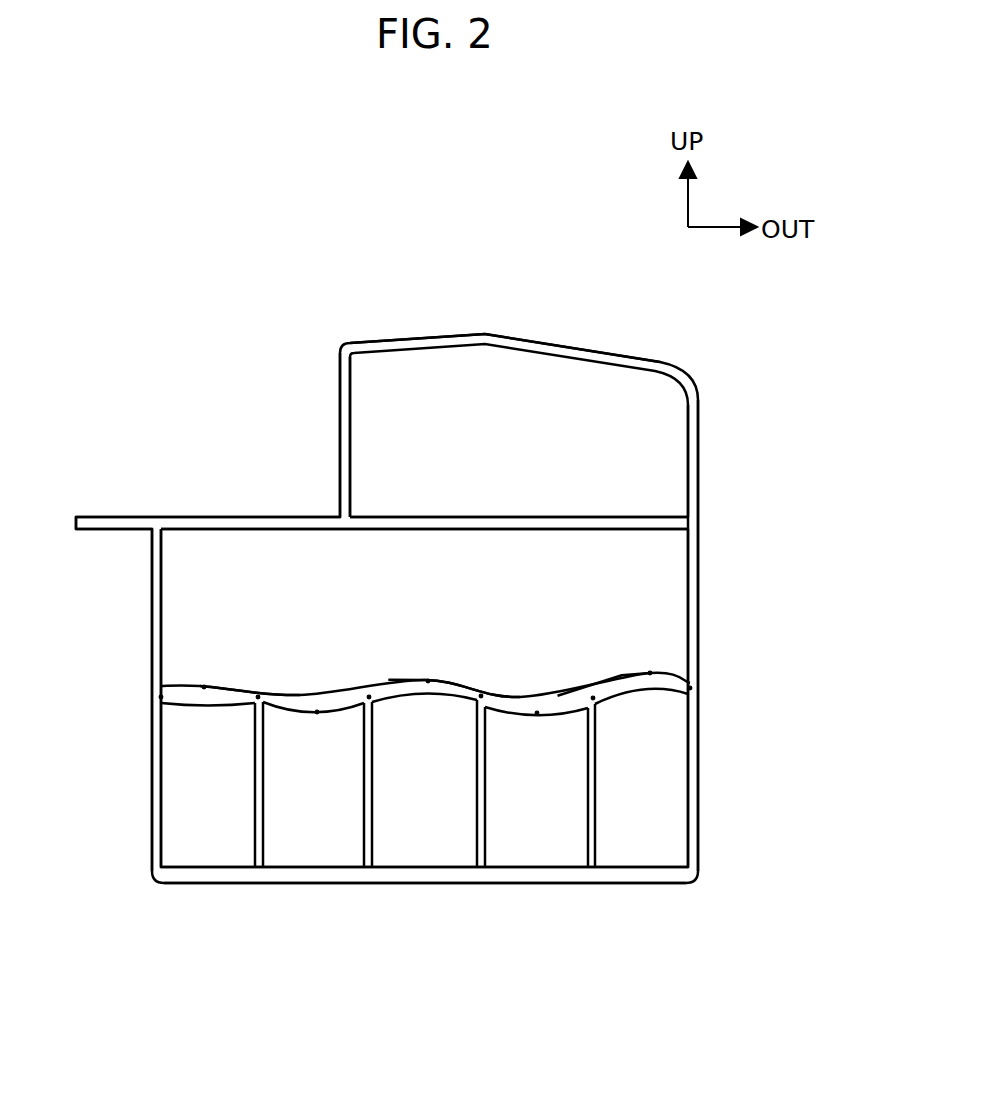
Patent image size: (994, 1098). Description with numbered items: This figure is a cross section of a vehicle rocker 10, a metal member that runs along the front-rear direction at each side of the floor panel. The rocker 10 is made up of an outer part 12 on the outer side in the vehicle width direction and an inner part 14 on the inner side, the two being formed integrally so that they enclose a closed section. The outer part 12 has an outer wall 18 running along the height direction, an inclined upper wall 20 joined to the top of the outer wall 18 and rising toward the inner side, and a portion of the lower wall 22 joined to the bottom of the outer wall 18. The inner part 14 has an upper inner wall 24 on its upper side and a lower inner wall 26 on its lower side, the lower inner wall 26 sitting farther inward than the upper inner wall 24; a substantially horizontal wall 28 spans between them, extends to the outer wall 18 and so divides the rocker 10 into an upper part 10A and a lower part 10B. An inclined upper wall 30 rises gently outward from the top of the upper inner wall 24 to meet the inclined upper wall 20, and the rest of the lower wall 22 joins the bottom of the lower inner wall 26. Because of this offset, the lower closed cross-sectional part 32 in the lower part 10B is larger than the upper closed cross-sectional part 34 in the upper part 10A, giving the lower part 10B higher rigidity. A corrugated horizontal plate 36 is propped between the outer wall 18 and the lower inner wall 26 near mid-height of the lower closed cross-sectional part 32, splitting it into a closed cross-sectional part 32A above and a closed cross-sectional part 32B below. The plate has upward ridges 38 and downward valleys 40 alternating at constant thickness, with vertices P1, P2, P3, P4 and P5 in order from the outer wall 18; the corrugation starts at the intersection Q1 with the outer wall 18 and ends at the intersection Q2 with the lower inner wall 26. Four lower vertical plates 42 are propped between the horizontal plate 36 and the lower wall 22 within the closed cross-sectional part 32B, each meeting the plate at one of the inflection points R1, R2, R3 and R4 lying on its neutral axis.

The rocker 10 is at (753, 331).
The upper part 10A is at (704, 433).
The lower part 10B is at (705, 794).
The outer part 12 is at (756, 497).
The inner part 14 is at (86, 494).
The outer wall 18 is at (698, 590).
The inclined upper wall 20 is at (604, 352).
The lower wall 22 is at (525, 873).
The upper inner wall 24 is at (341, 425).
The lower inner wall 26 is at (152, 786).
The horizontal wall 28 is at (201, 517).
The inclined upper wall 30 is at (410, 343).
The lower closed cross-sectional part 32 is at (472, 698).
The closed cross-sectional part 32A is at (424, 569).
The closed cross-sectional part 32B is at (424, 731).
The upper closed cross-sectional part 34 is at (566, 430).
The horizontal plate 36 is at (508, 686).
The ridges 38 is at (222, 697).
The valleys 40 is at (336, 711).
The lower vertical plates 42 is at (258, 832).
The vertex P1 is at (650, 673).
The vertex P2 is at (537, 713).
The vertex P3 is at (428, 681).
The vertex P4 is at (317, 712).
The vertex P5 is at (204, 687).
The inflection point R1 is at (593, 698).
The inflection point R2 is at (481, 696).
The inflection point R3 is at (369, 697).
The inflection point R4 is at (258, 697).
The point of intersection Q1 is at (690, 688).
The point of intersection Q2 is at (161, 697).